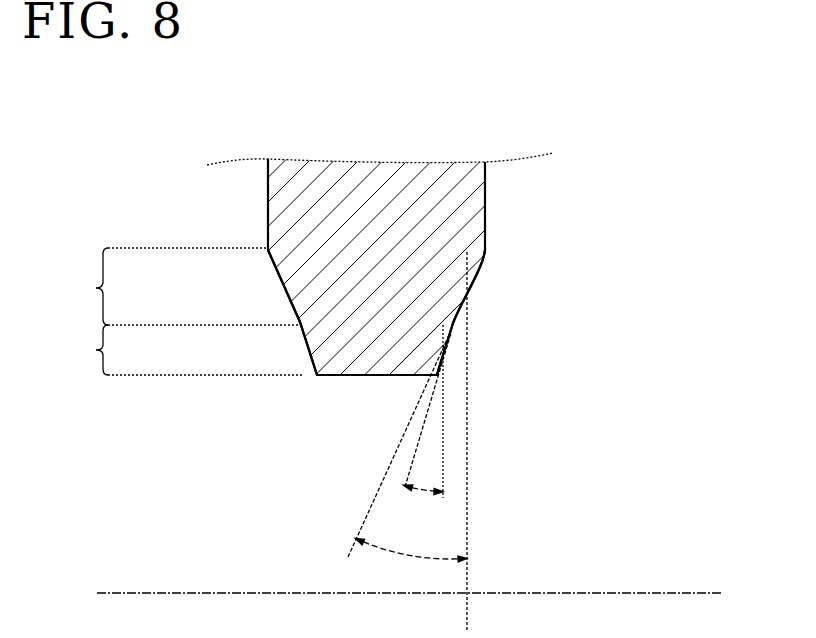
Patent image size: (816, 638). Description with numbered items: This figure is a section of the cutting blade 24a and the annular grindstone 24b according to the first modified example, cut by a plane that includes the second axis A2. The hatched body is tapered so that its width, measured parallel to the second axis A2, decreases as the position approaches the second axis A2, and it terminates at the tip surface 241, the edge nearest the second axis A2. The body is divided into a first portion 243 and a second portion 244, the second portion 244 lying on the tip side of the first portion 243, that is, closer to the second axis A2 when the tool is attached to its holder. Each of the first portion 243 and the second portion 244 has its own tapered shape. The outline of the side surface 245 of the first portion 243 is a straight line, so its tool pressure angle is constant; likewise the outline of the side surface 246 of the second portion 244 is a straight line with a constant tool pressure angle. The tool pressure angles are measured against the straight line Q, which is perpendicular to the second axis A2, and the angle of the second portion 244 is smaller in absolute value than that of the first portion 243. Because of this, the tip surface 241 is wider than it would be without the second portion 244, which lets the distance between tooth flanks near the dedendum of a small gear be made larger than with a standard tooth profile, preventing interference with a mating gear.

The cutting blade 24a is at (352, 218).
The annular grindstone 24b is at (318, 158).
The tip surface 241 is at (368, 376).
The first portion 243 is at (170, 286).
The second portion 244 is at (171, 350).
The side surface 245 is at (280, 277).
The side surface 246 is at (308, 348).
The straight line Q is at (467, 437).
The second axis A2 is at (394, 590).